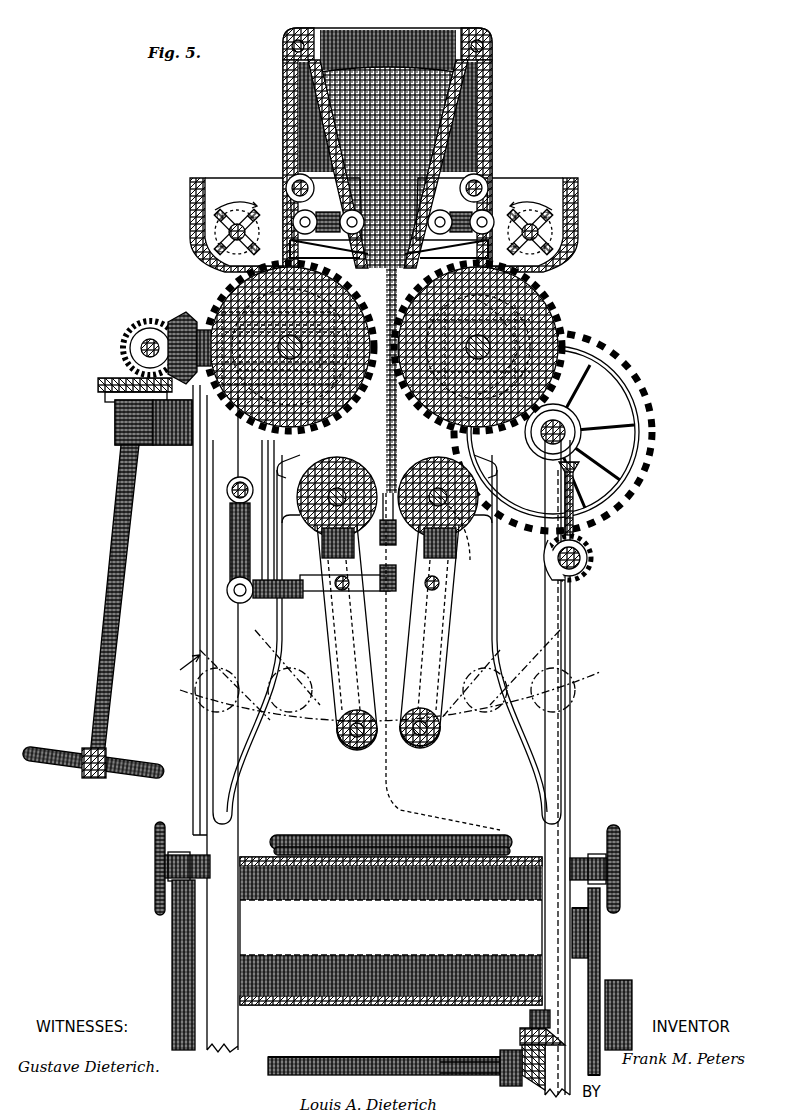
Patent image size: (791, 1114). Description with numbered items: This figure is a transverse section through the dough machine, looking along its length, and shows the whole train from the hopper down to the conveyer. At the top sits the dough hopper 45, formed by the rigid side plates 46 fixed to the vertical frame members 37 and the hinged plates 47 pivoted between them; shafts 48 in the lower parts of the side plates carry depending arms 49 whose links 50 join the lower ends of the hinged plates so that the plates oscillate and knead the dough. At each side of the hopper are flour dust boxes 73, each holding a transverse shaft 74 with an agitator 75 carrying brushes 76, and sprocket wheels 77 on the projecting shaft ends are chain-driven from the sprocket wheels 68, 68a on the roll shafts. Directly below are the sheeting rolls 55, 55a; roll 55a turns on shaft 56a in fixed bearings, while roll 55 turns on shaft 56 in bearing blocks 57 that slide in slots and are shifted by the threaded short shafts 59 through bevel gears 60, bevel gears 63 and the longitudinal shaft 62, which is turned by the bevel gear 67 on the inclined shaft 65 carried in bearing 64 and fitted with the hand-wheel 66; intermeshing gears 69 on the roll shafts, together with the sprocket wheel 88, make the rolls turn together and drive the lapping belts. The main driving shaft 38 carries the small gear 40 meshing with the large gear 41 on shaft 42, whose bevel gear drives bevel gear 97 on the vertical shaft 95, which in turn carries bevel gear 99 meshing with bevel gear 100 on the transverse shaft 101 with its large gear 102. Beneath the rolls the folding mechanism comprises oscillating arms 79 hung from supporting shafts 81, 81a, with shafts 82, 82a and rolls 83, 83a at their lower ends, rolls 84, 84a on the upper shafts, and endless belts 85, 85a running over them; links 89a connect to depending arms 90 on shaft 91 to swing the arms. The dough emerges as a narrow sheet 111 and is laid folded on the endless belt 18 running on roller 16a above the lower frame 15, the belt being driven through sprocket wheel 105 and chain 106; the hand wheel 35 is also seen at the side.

The dough hopper 45 is at (387, 139).
The side plates 46 is at (490, 112).
The hinged plates 47 is at (330, 152).
The shafts 48 is at (312, 186).
The depending arms 49 is at (393, 217).
The links 50 is at (389, 249).
The dust boxes 73 is at (205, 176).
The transverse shafts 74 is at (222, 232).
The agitators 75 is at (226, 240).
The brushes 76 is at (218, 212).
The sprocket wheels 77 is at (238, 210).
The sheeting roll 55 is at (218, 286).
The shaft 56 is at (300, 348).
The bearing blocks 57 is at (278, 359).
The sprocket wheel 68 is at (282, 377).
The sheeting roll 55a is at (562, 300).
The shaft 56a is at (540, 330).
The sprocket wheel 68a is at (499, 336).
The longitudinal shaft 62 is at (145, 345).
The bevel gears 63 is at (125, 346).
The bevel gears 60 is at (178, 320).
The short shafts 59 is at (204, 368).
The bevel gear 67 is at (112, 392).
The bearing 64 is at (180, 446).
The vertically inclined shaft 65 is at (120, 522).
The hand-wheel 66 is at (48, 770).
The vertical frame members 37 is at (377, 610).
The lower frame 15 is at (240, 1034).
The vertical shaft 95 is at (548, 640).
The roll 84 is at (337, 497).
The roll 84a is at (438, 497).
The intermeshing gears 69 is at (387, 452).
The supporting shaft 81 is at (337, 497).
The supporting shaft 81a is at (448, 500).
The endless belt 85 is at (326, 640).
The endless belt 85a is at (455, 624).
The links 89a is at (338, 590).
The sprocket wheel 88 is at (388, 542).
The roll 83 is at (354, 750).
The roll 83a is at (420, 748).
The shaft 82 is at (340, 745).
The shaft 82a is at (440, 745).
The oscillating arms 79 is at (345, 695).
The shaft 91 is at (226, 493).
The depending arms 90 is at (228, 560).
The small gear 40 is at (592, 578).
The main driving shaft 38 is at (582, 550).
The large gear 41 is at (640, 378).
The shaft 42 is at (566, 424).
The bevel gear 97 is at (578, 461).
The dough sheet 111 is at (282, 836).
The transverse roller 16a is at (391, 931).
The endless belt 18 is at (508, 852).
The transverse shaft 101 is at (362, 1078).
The hand wheel 35 is at (155, 848).
The sprocket wheel 105 is at (602, 922).
The chain 106 is at (600, 975).
The large gear 102 is at (634, 985).
The bevel gear 99 is at (518, 1030).
The bevel gear 100 is at (518, 1090).